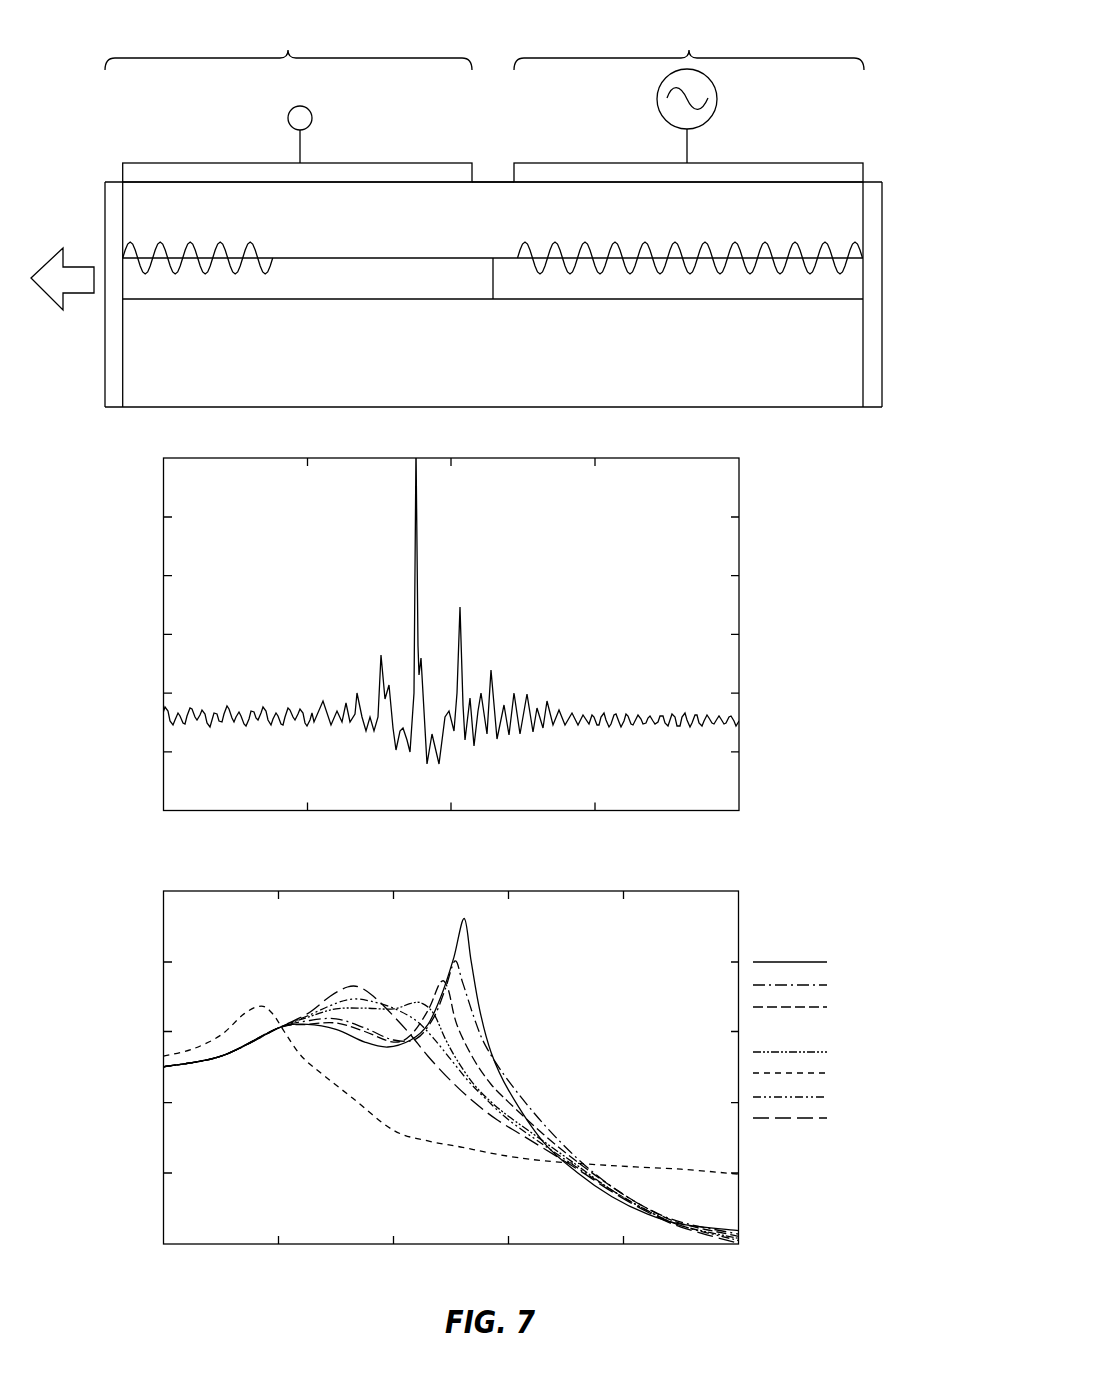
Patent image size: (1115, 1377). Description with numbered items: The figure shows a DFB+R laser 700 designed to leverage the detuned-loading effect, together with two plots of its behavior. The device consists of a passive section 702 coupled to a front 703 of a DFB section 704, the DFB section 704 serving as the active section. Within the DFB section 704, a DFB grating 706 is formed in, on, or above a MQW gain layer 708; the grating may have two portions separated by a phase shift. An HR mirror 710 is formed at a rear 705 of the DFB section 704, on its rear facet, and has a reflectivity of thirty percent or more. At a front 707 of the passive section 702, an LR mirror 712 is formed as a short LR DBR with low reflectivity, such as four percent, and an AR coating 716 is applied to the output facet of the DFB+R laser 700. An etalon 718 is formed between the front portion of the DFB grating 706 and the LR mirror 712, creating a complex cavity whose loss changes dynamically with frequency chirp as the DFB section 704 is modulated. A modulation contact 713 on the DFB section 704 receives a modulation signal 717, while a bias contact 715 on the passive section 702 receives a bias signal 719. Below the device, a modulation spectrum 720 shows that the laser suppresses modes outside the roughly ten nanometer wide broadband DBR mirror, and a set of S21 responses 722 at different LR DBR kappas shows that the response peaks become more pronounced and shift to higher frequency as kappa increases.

The DFB+R laser 700 is at (865, 37).
The passive section 702 is at (299, 160).
The front of the DFB section 703 is at (499, 160).
The DFB section 704 is at (678, 140).
The rear of the DFB section 705 is at (876, 157).
The DFB grating 706 is at (802, 247).
The front of the passive section 707 is at (111, 169).
The MQW gain layer 708 is at (847, 302).
The HR mirror 710 is at (883, 287).
The LR mirror 712 is at (146, 226).
The modulation contact 713 is at (524, 163).
The bias contact 715 is at (148, 163).
The AR coating 716 is at (105, 370).
The modulation signal 717 is at (658, 118).
The etalon 718 is at (275, 372).
The bias signal 719 is at (289, 114).
The modulation spectrum 720 is at (256, 516).
The S21 responses 722 is at (256, 949).